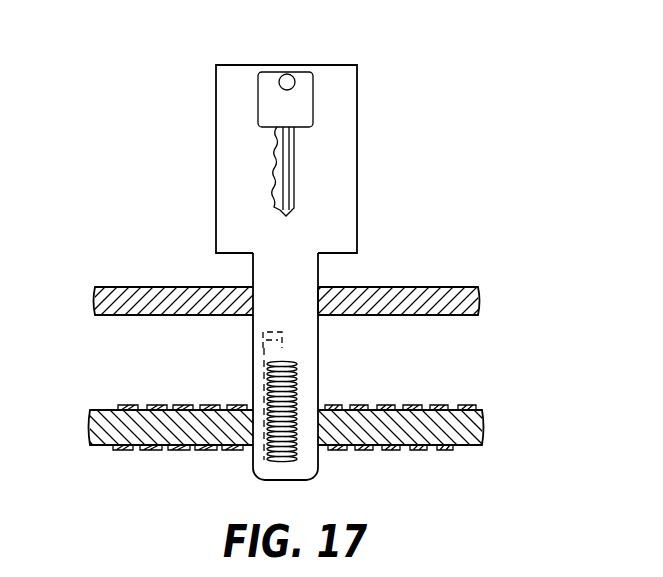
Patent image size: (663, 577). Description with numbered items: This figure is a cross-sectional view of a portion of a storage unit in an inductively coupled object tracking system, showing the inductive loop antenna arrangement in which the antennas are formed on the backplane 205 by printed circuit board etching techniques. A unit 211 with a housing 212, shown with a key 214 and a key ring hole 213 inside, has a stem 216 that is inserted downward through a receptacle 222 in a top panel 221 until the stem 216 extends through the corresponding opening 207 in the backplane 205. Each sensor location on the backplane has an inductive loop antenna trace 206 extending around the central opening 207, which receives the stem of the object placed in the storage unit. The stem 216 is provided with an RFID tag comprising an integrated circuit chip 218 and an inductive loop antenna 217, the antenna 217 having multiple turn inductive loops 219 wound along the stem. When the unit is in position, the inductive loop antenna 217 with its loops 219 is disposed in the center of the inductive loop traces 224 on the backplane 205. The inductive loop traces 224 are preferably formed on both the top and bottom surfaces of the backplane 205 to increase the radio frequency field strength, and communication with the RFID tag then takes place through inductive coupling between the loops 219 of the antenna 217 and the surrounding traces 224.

The backplane 205 is at (462, 405).
The inductive loop antenna trace 206 is at (143, 391).
The central opening 207 is at (333, 450).
The locking assembly 211 is at (393, 146).
The housing 212 is at (340, 93).
The key ring hole 213 is at (286, 80).
The key 214 is at (265, 110).
The stem 216 is at (333, 350).
The inductive loop antenna 217 is at (248, 374).
The integrated circuit chip 218 is at (258, 348).
The multiple turn inductive loops 219 is at (294, 407).
The top panel 221 is at (437, 287).
The receptacle 222 is at (319, 306).
The inductive loop traces 224 is at (440, 402).